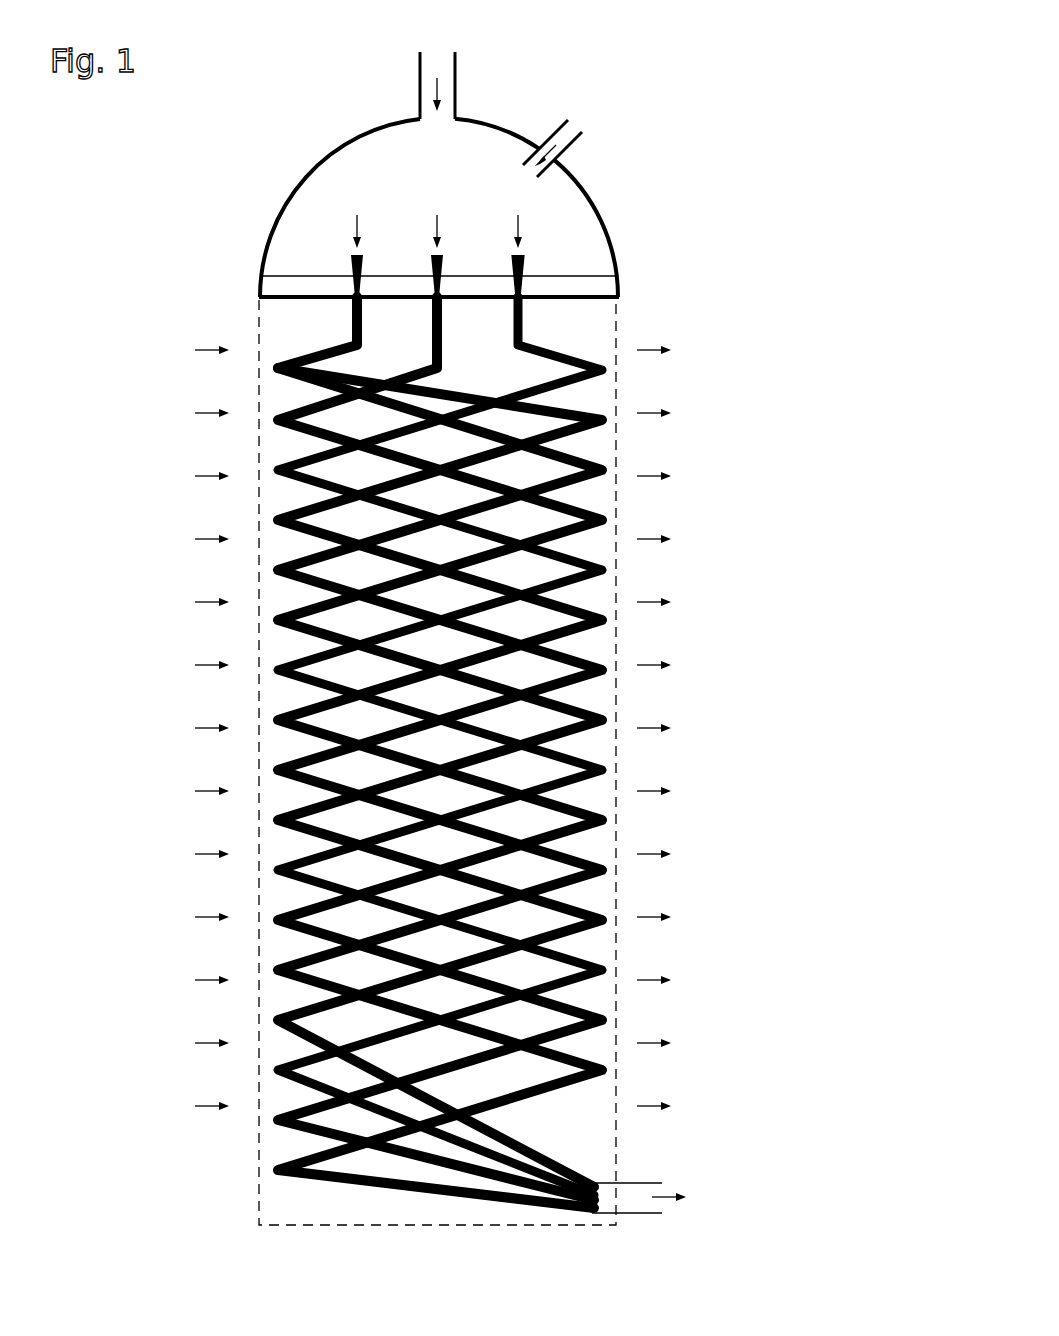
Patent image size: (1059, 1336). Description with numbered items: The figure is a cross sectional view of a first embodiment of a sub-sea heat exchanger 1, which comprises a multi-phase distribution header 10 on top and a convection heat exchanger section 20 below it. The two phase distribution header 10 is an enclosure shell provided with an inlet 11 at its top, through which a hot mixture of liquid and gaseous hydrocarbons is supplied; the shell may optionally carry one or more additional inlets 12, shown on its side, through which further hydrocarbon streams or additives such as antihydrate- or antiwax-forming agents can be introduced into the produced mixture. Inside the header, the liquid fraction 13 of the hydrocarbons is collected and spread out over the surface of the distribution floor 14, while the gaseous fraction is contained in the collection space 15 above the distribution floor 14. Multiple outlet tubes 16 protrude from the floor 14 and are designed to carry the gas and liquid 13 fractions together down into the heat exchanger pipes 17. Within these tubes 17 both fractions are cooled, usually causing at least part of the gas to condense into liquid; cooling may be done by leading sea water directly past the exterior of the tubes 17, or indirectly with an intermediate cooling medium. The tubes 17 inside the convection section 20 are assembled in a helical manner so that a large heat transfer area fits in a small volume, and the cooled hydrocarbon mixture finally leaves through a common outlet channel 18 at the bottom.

The heat exchanger 1 is at (362, 75).
The multi-phase distribution header 10 is at (313, 163).
The inlet 11 is at (455, 97).
The additional inlet 12 is at (573, 140).
The liquid fraction 13 is at (285, 283).
The distribution floor 14 is at (258, 296).
The collection space 15 is at (424, 193).
The outlet tubes 16 is at (528, 265).
The heat exchanger pipes 17 is at (578, 358).
The common outlet channel 18 is at (642, 1183).
The convection heat exchanger section 20 is at (258, 445).